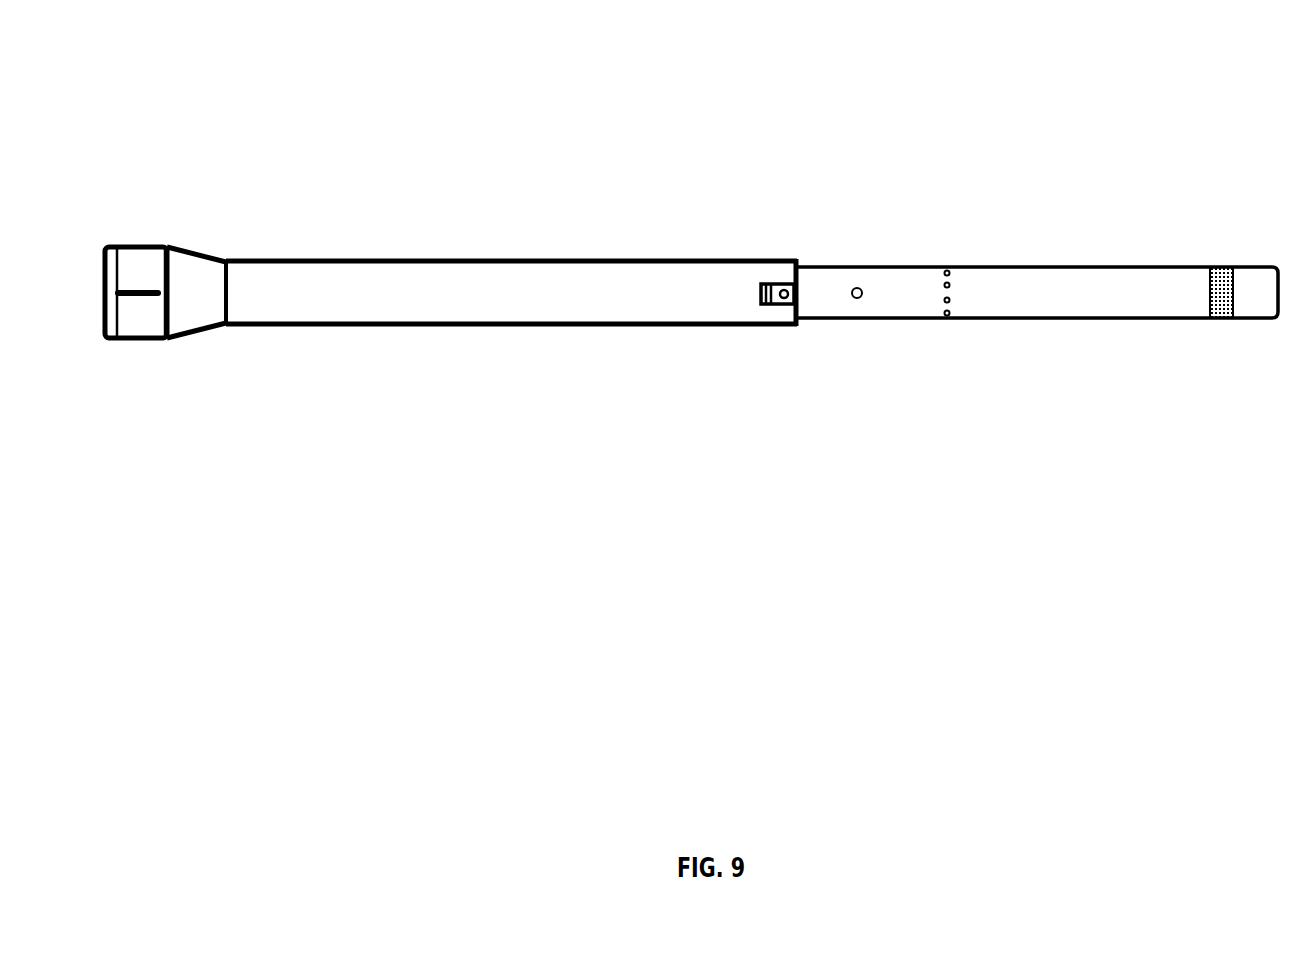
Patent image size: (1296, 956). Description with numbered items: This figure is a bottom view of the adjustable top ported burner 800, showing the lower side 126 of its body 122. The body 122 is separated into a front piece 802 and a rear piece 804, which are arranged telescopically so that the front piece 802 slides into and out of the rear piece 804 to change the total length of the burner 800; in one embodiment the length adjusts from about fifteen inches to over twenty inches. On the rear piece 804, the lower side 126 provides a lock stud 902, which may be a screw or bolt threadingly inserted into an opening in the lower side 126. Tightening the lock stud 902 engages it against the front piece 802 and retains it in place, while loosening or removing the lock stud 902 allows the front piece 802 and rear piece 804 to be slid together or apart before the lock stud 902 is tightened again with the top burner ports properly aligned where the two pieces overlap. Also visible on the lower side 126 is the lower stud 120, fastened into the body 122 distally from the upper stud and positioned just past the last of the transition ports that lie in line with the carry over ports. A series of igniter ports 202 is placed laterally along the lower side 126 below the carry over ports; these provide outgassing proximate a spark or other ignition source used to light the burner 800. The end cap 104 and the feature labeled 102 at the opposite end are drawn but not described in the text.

The adjustable top ported burner 800 is at (304, 155).
The end cap 104 is at (147, 264).
The body 122 is at (608, 253).
The lower side 126 is at (623, 303).
The rear piece 804 is at (492, 300).
The lock stud 902 is at (780, 283).
The lower stud 120 is at (858, 285).
The igniter ports 202 is at (956, 285).
The front piece 802 is at (1023, 305).
The textured grip band 102 is at (1257, 298).